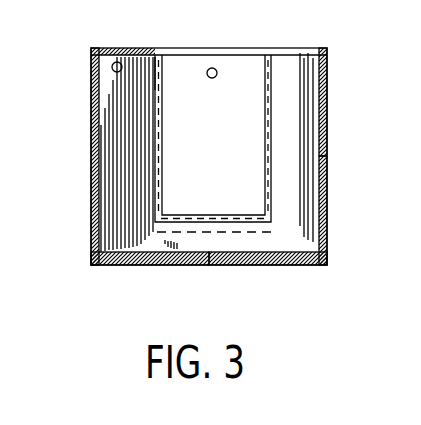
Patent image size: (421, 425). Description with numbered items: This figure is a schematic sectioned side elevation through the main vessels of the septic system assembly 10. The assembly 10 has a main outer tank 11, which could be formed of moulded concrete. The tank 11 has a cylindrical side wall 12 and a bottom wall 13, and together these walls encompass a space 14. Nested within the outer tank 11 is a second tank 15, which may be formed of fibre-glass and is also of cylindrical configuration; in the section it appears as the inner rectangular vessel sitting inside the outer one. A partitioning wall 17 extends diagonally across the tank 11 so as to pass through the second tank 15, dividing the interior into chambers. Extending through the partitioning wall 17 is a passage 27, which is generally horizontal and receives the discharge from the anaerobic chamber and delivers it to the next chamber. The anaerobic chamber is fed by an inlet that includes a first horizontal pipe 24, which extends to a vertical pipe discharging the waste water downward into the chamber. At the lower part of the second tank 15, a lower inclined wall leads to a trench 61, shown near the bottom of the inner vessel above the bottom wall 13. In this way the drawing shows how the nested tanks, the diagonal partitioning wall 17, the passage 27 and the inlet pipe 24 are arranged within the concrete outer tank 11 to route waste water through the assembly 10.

The assembly 10 is at (90, 207).
The main outer tank 11 is at (292, 263).
The cylindrical side wall 12 is at (328, 232).
The bottom wall 13 is at (155, 263).
The space 14 is at (299, 223).
The second tank 15 is at (158, 72).
The partitioning wall 17 is at (295, 96).
The first horizontal pipe 24 is at (327, 67).
The passage 27 is at (118, 62).
The trench 61 is at (225, 233).